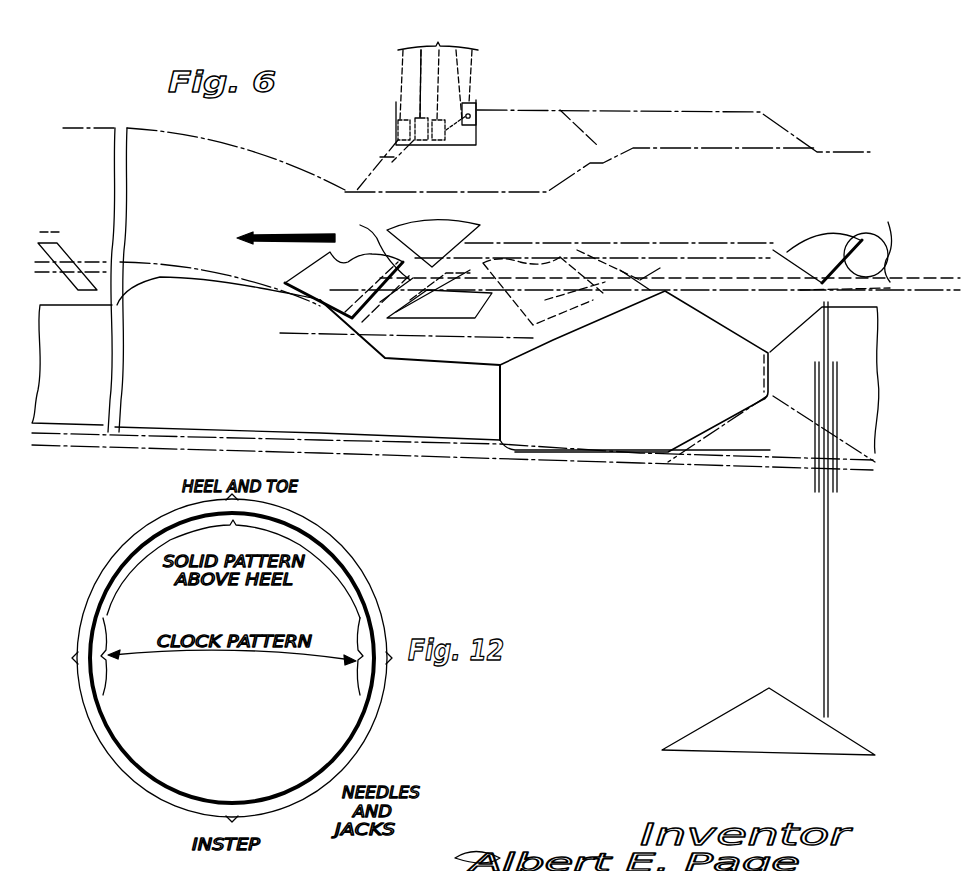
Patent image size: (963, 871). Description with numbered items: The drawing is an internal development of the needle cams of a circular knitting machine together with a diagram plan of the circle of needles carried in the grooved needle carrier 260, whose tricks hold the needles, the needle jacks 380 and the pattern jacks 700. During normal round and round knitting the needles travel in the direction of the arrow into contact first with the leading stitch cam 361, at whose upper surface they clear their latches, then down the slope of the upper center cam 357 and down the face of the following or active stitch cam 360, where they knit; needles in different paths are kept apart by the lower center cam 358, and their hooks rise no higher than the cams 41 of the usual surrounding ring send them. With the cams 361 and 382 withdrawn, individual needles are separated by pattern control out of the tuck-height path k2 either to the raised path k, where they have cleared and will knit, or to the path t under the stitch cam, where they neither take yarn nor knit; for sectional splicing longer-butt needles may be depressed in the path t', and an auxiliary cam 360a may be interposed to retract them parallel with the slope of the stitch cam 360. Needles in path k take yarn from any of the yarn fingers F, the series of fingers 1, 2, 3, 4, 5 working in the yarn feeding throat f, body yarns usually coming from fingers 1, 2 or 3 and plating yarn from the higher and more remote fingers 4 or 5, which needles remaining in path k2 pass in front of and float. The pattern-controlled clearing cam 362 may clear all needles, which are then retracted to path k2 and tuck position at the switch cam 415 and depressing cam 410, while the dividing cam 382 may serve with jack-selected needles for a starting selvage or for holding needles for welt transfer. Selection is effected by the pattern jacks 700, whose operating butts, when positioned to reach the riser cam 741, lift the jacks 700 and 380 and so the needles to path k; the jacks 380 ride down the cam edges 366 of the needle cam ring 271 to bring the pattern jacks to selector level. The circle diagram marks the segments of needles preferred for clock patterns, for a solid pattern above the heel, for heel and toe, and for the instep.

In FIG. 6, the needle cam ring 271 is at (452, 385).
In FIG. 6, the cams of the usual ring of cams 41 is at (672, 297).
In FIG. 6, the pattern-controlled clearing cam 362 is at (60, 250).
In FIG. 6, the following or active stitch cam 360 is at (344, 285).
In FIG. 6, the auxiliary cam 360a is at (381, 241).
In FIG. 6, the path t' is at (359, 249).
In FIG. 6, the upper center cam 357 is at (433, 243).
In FIG. 6, the lower center cam 358 is at (439, 296).
In FIG. 6, the path t is at (443, 346).
In FIG. 6, the leading stitch cam 361 is at (561, 287).
In FIG. 6, the path k is at (525, 245).
In FIG. 6, the path k2 is at (588, 257).
In FIG. 6, the dividing cam 382 is at (647, 265).
In FIG. 6, the depressing cam 410 is at (807, 253).
In FIG. 6, the switch cam 415 is at (888, 232).
In FIG. 6, the needle jack 380 is at (828, 322).
In FIG. 6, the pattern jack 700 is at (822, 575).
In FIG. 6, the riser cam 741 is at (714, 740).
In FIG. 6, the cam edges 366 is at (802, 412).
In FIG. 6, the yarn fingers F is at (423, 109).
In FIG. 6, the connecting lines y is at (438, 65).
In FIG. 6, the yarn finger 1 is at (393, 84).
In FIG. 6, the yarn finger 2 is at (410, 86).
In FIG. 6, the yarn finger 3 is at (428, 88).
In FIG. 6, the yarn finger 4 is at (458, 86).
In FIG. 6, the yarn finger 5 is at (480, 86).
In FIG. 6, the yarn feeding throat f is at (476, 125).
In FIG. 12, the grooved needle carrier 260 is at (185, 793).